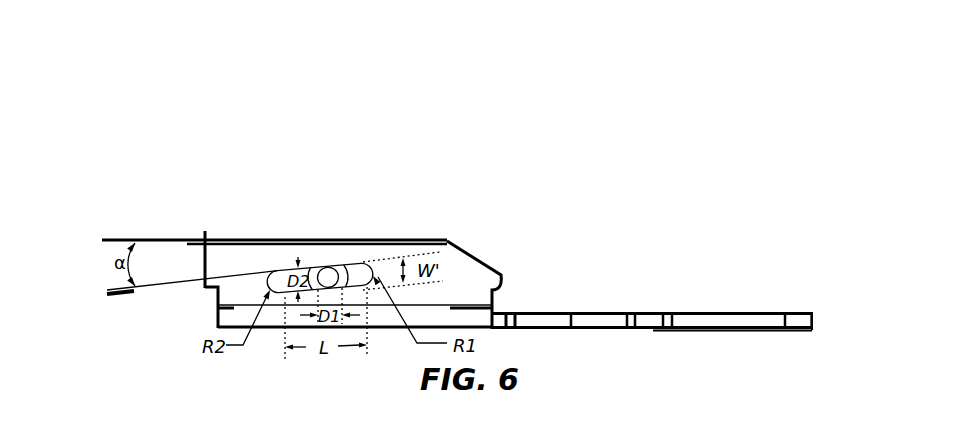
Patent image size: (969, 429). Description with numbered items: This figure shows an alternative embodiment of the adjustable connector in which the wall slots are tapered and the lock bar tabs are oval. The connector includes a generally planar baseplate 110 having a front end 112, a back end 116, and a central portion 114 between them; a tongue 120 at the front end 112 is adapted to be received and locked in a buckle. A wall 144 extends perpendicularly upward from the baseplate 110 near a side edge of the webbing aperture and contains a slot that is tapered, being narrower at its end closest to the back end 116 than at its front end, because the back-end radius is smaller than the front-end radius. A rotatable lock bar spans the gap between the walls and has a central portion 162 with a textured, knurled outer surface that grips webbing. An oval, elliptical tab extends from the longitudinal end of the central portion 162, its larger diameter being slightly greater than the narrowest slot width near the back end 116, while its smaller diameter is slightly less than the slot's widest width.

The baseplate 110 is at (525, 309).
The front end 112 is at (813, 320).
The central portion 114 is at (553, 309).
The back end 116 is at (210, 301).
The tongue 120 is at (780, 311).
The wall 144 is at (460, 244).
The central portion 162 is at (313, 267).